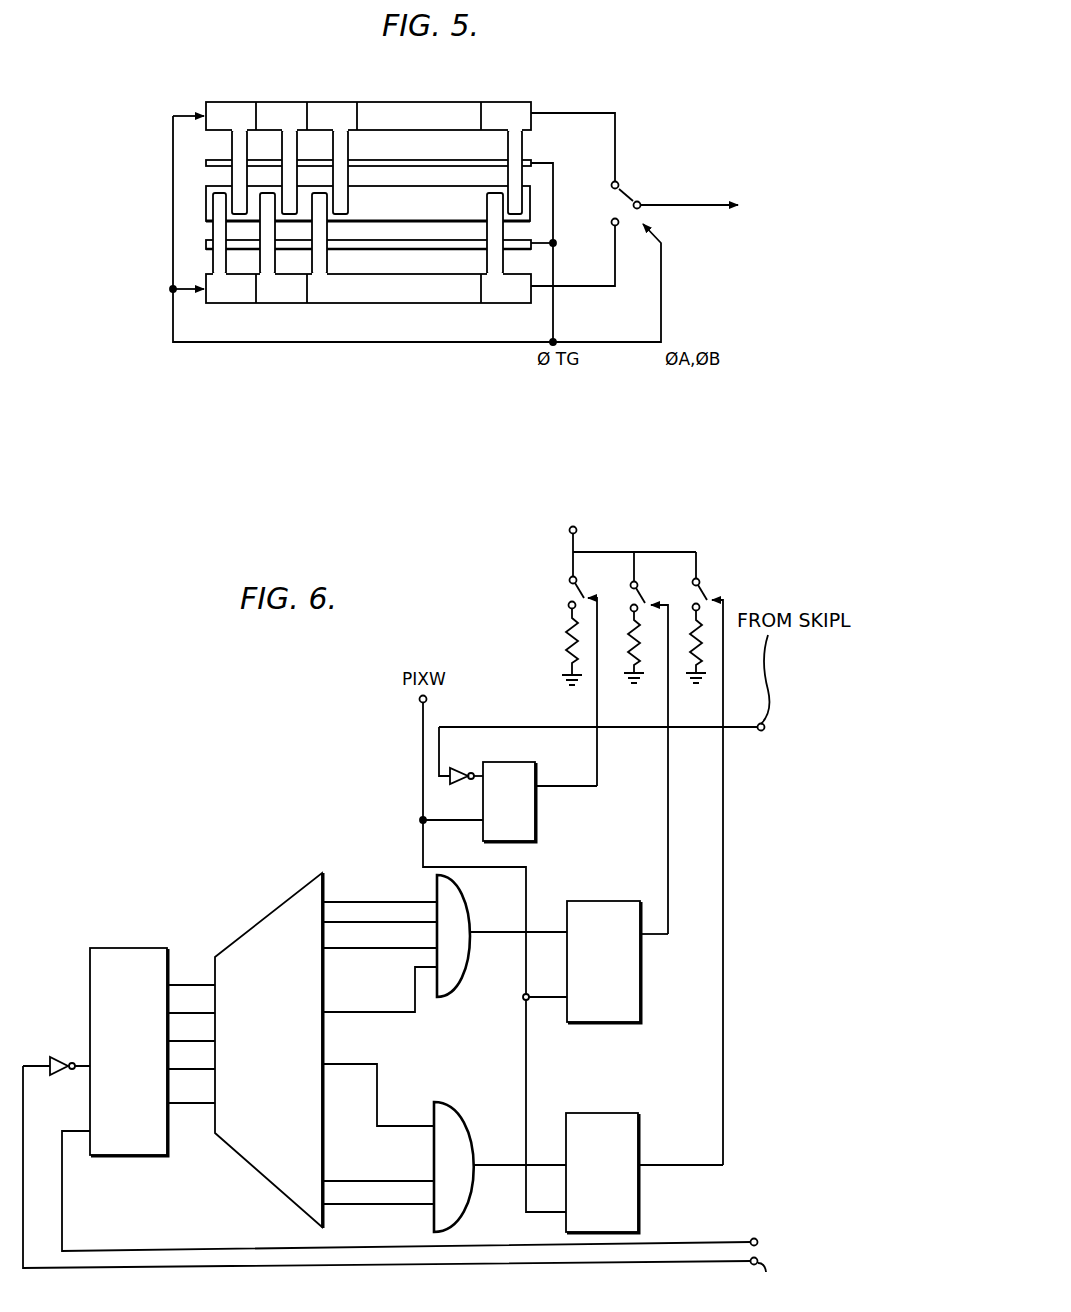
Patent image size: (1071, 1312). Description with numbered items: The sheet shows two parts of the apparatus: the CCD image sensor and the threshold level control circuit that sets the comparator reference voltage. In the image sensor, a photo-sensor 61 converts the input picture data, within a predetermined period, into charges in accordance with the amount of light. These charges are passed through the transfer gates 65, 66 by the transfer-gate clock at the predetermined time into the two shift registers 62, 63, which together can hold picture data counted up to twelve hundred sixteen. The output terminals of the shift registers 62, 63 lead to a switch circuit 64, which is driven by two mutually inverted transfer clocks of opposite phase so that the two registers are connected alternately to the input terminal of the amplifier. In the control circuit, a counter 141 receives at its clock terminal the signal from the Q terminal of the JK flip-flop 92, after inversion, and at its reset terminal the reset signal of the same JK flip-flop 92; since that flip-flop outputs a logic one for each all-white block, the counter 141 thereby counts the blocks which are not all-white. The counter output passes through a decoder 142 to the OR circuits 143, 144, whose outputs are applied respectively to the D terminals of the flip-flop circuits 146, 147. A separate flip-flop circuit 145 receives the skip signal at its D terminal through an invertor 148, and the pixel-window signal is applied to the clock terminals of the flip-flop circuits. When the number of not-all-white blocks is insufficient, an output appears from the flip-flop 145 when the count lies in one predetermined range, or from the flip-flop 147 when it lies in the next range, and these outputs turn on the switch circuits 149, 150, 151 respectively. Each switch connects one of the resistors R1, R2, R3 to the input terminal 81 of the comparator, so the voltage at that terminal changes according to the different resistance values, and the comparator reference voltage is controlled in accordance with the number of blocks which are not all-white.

In FIG. 5, the photo-sensor 61 is at (530, 196).
In FIG. 5, the shift register 62 is at (476, 102).
In FIG. 5, the shift register 63 is at (440, 303).
In FIG. 5, the switch circuit 64 is at (625, 198).
In FIG. 5, the transfer gate 65 is at (531, 163).
In FIG. 5, the transfer gate 66 is at (531, 250).
In FIG. 6, the input terminal of the comparator 81 is at (569, 530).
In FIG. 6, the JK flip-flop 92 is at (758, 1242).
In FIG. 6, the counter 141 is at (142, 948).
In FIG. 6, the decoder 142 is at (284, 905).
In FIG. 6, the OR circuit 143 is at (434, 886).
In FIG. 6, the OR circuit 144 is at (448, 1114).
In FIG. 6, the flip-flop circuit 145 is at (537, 832).
In FIG. 6, the flip-flop circuit 146 is at (642, 1006).
In FIG. 6, the flip-flop circuit 147 is at (640, 1198).
In FIG. 6, the invertor 148 is at (459, 766).
In FIG. 6, the switch circuit 149 is at (569, 580).
In FIG. 6, the switch circuit 150 is at (641, 596).
In FIG. 6, the switch circuit 151 is at (706, 592).
In FIG. 6, the resistor R1 is at (565, 632).
In FIG. 6, the resistor R2 is at (628, 643).
In FIG. 6, the resistor R3 is at (690, 643).